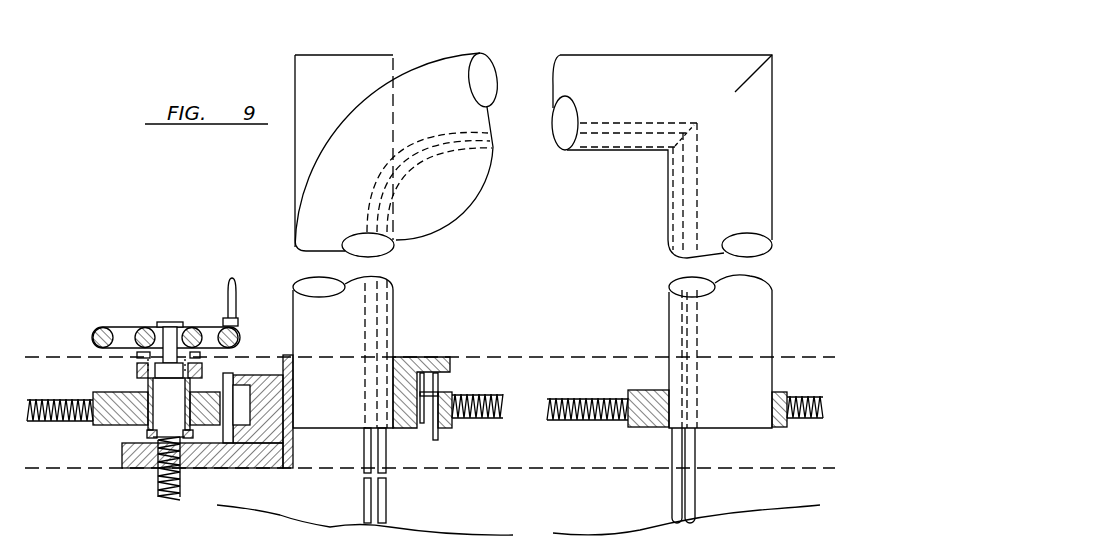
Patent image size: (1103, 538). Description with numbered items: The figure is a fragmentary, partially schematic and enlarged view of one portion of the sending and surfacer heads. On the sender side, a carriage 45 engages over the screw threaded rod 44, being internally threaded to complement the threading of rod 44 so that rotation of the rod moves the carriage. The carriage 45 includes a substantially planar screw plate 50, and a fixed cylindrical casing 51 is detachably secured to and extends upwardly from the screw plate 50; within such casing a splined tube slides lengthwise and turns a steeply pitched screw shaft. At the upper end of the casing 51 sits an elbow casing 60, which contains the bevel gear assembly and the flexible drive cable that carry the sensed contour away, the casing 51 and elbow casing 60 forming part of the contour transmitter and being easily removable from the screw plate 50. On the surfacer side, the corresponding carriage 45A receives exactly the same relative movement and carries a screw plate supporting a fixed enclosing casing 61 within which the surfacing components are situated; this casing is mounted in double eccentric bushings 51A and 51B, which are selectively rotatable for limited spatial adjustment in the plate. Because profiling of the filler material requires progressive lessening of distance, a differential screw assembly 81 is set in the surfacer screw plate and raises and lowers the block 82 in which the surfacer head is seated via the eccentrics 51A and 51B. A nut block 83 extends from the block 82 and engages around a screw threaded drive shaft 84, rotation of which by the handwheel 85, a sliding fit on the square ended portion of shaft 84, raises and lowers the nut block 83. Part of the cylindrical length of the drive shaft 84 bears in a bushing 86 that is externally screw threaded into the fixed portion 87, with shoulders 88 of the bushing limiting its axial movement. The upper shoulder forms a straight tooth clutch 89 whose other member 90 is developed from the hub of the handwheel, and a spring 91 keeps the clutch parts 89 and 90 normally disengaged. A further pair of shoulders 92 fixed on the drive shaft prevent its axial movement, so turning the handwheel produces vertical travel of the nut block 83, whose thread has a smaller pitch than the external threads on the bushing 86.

The elbow casing 60 is at (773, 76).
The fixed enclosing casing 61 is at (395, 338).
The fixed cylindrical casing 51 is at (753, 332).
The eccentric bushing 51A is at (420, 420).
The eccentric bushing 51B is at (443, 357).
The carriage 45A is at (450, 428).
The screw threaded rod 44 is at (595, 423).
The carriage 45 is at (782, 427).
The screw plate 50 is at (650, 388).
The differential screw assembly 81 is at (140, 266).
The block 82 is at (245, 398).
The nut block 83 is at (135, 470).
The screw threaded drive shaft 84 is at (180, 487).
The handwheel 85 is at (232, 278).
The bushing 86 is at (138, 393).
The fixed portion 87 is at (97, 425).
The shoulders 88 is at (202, 373).
The straight tooth clutch 89 is at (133, 365).
The clutch member 90 is at (152, 307).
The spring 91 is at (202, 323).
The shoulders 92 is at (168, 378).